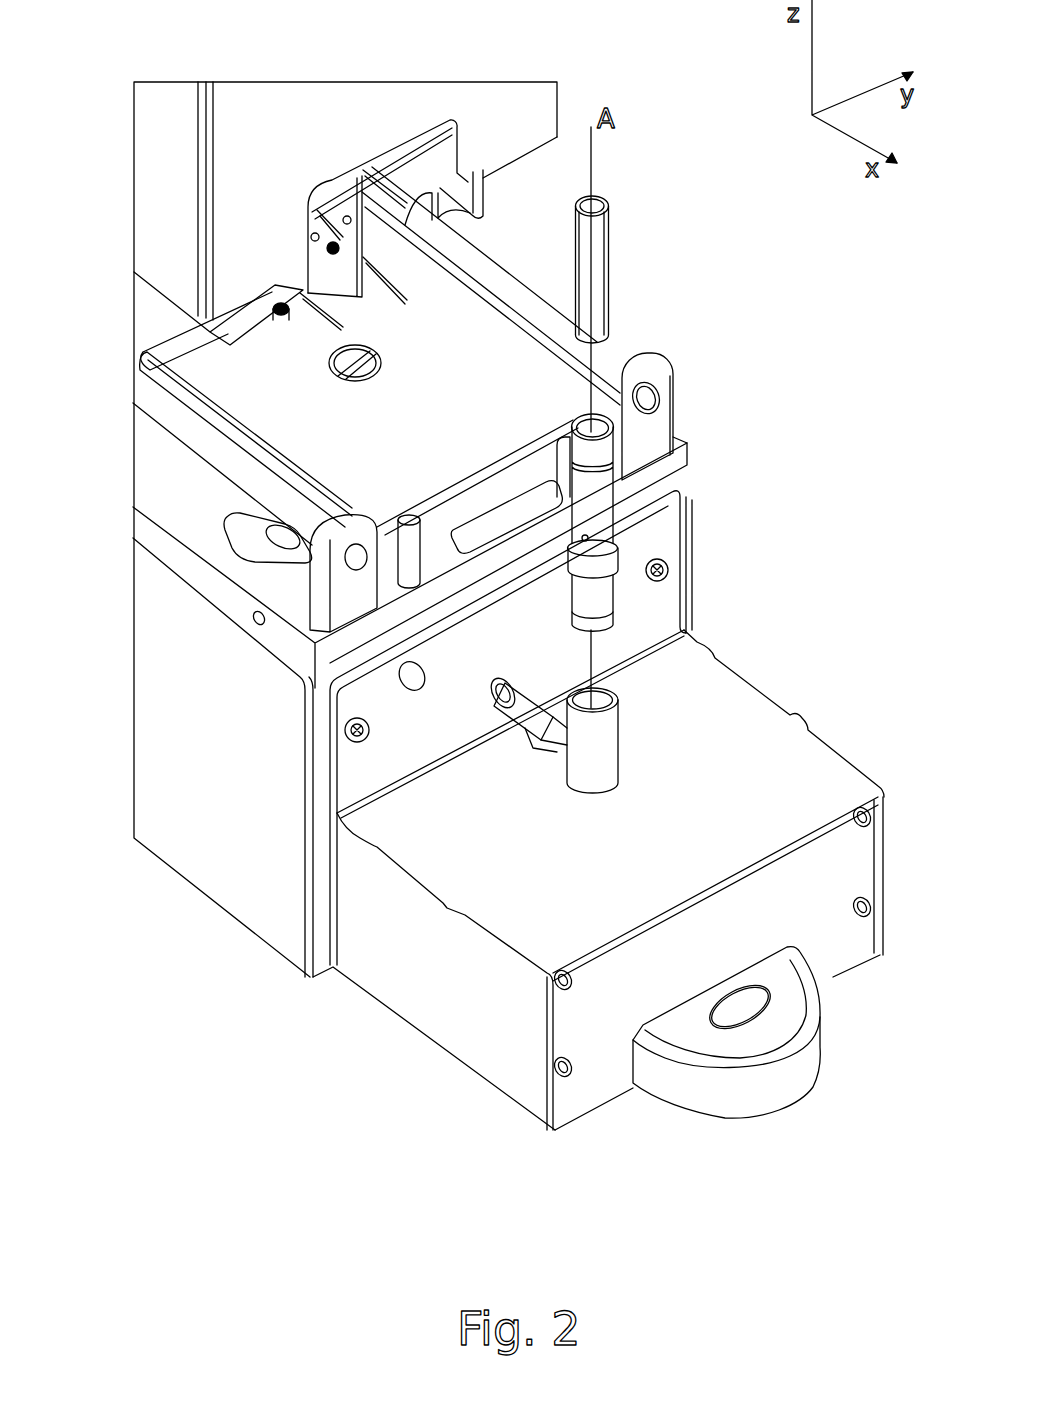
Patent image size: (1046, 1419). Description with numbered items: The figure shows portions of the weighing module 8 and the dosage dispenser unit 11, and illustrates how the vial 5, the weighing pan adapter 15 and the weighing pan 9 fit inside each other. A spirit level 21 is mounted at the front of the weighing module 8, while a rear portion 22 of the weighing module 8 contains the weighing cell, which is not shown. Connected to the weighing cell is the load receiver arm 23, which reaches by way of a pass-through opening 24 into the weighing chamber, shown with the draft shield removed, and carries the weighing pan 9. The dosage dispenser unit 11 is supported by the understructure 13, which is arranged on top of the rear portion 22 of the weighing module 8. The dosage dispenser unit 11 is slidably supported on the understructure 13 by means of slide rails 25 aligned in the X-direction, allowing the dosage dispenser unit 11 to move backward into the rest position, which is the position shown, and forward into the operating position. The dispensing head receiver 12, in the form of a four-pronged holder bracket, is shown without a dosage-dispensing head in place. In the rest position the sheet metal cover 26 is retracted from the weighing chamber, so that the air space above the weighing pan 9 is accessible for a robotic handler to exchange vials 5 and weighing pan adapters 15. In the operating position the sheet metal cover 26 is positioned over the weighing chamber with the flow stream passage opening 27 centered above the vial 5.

The vial 5 is at (590, 272).
The weighing module 8 is at (770, 792).
The weighing pan 9 is at (602, 760).
The dosage dispenser unit 11 is at (167, 157).
The dispensing head receiver 12 is at (327, 273).
The understructure 13 is at (210, 580).
The weighing pan adapter 15 is at (600, 505).
The spirit level 21 is at (667, 1073).
The rear portion 22 is at (653, 603).
The load receiver arm 23 is at (520, 717).
The pass-through opening 24 is at (510, 710).
The slide rails 25 is at (507, 290).
The sheet metal cover 26 is at (285, 420).
The flow stream passage opening 27 is at (343, 363).